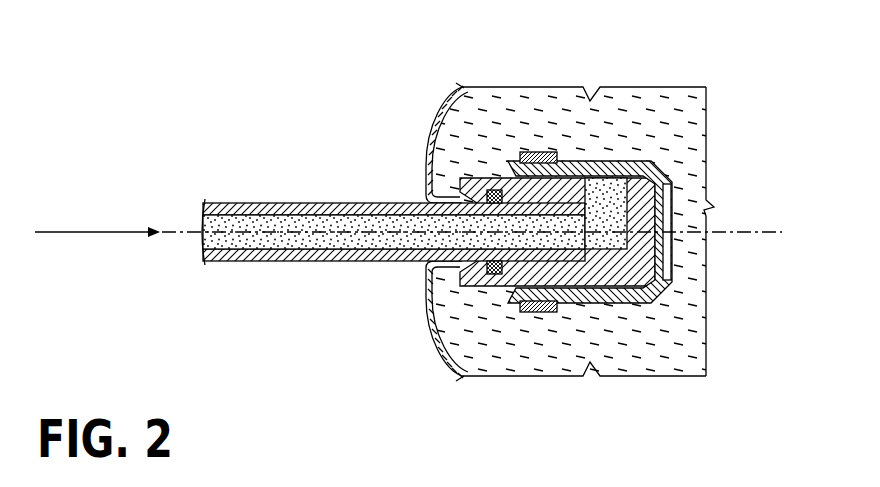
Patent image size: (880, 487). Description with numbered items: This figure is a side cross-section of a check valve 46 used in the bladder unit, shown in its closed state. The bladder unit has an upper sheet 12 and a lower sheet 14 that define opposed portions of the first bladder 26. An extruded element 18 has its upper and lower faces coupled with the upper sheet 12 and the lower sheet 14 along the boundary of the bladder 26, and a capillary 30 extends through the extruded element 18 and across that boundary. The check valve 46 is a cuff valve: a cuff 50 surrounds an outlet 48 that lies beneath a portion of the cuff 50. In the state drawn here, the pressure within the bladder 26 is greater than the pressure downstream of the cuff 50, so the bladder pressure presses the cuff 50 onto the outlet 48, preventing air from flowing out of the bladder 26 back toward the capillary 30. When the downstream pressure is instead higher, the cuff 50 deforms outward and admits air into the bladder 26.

The upper sheet 12 is at (435, 130).
The lower sheet 14 is at (432, 328).
The first extruded element 18 is at (238, 263).
The first capillary 30 is at (289, 222).
The first bladder 26 is at (680, 337).
The check valve 46 is at (660, 158).
The outlet 48 is at (662, 181).
The cuff 50 is at (612, 162).